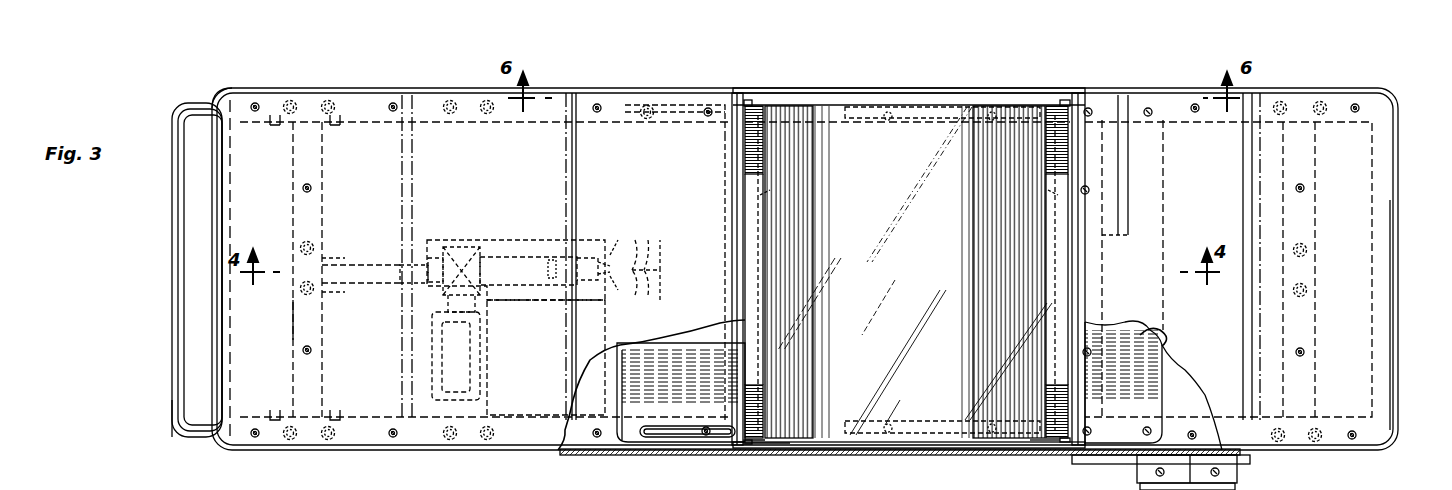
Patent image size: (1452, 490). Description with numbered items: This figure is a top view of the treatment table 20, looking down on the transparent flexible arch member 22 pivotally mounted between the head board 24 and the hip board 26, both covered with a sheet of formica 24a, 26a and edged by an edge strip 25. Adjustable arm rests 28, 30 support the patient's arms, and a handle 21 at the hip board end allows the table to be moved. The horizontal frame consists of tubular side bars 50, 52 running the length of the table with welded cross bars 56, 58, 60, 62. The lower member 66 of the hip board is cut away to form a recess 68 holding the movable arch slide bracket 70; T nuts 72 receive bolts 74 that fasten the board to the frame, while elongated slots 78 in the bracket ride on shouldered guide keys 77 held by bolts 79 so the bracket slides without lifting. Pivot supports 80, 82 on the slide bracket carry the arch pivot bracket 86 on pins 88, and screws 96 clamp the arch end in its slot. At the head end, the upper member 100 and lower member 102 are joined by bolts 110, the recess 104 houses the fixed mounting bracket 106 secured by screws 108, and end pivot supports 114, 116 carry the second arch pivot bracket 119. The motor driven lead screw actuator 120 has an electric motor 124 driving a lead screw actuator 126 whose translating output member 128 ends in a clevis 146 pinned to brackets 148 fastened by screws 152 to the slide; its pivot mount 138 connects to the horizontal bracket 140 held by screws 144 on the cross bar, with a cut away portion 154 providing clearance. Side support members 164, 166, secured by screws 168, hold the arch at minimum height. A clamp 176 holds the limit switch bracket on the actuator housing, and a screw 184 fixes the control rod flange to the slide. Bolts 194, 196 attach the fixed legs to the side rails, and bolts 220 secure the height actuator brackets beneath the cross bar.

The table 20 is at (130, 305).
The handle 21 is at (172, 240).
The arch member 22 is at (828, 102).
The head board portion 24 is at (1398, 175).
The sheet of formica 24a is at (226, 358).
The edge strip 25 is at (222, 90).
The hip board portion 26 is at (460, 88).
The sheet of formica 26a is at (1375, 292).
The adjustable arm rest 28 is at (1222, 475).
The adjustable arm rest 30 is at (1155, 474).
The tubular side bar 50 is at (858, 88).
The tubular side bar 52 is at (878, 448).
The tubular cross bar 56 is at (292, 322).
The tubular cross bar 58 is at (718, 185).
The tubular cross bar 60 is at (1110, 235).
The tubular cross bar 62 is at (1318, 220).
The lower member of hip board 66 is at (615, 365).
The recess 68 is at (625, 402).
The arch slide bracket 70 is at (692, 342).
The T nut 72 is at (256, 100).
The bolt 74 is at (256, 118).
The shouldered guide key 77 is at (715, 105).
The elongated slot 78 is at (650, 105).
The bolt 79 is at (715, 112).
The pivot support 80 is at (765, 445).
The pivot support 82 is at (760, 100).
The arch pivot bracket 86 is at (770, 300).
The pin 88 is at (750, 100).
The screw 96 is at (762, 193).
The upper member of head board 100 is at (1195, 390).
The lower member of head board 102 is at (1170, 375).
The recess 104 is at (1150, 340).
The fixed mounting bracket 106 is at (1118, 462).
The screw 108 is at (1148, 116).
The bolt 110 is at (1195, 100).
The end pivot support 114 is at (1040, 445).
The end pivot support 116 is at (1058, 100).
The arch pivot bracket 119 is at (1045, 300).
The motor driven lead screw actuator 120 is at (488, 240).
The electric motor 124 is at (440, 360).
The lead screw actuator 126 is at (490, 250).
The translating output member 128 is at (590, 257).
The pivot mount 138 is at (425, 258).
The horizontal bracket 140 is at (410, 283).
The screw 144 is at (345, 256).
The clevis 146 is at (604, 255).
The bracket 148 is at (618, 240).
The screw 152 is at (646, 240).
The cut away portion 154 is at (490, 378).
The side support member 164 is at (940, 105).
The side support member 166 is at (938, 440).
The screw 168 is at (990, 120).
The clamp 176 is at (555, 283).
The screw 184 is at (660, 270).
The bolt 194 is at (1320, 100).
The bolt 196 is at (1285, 442).
The bolt 220 is at (1308, 288).